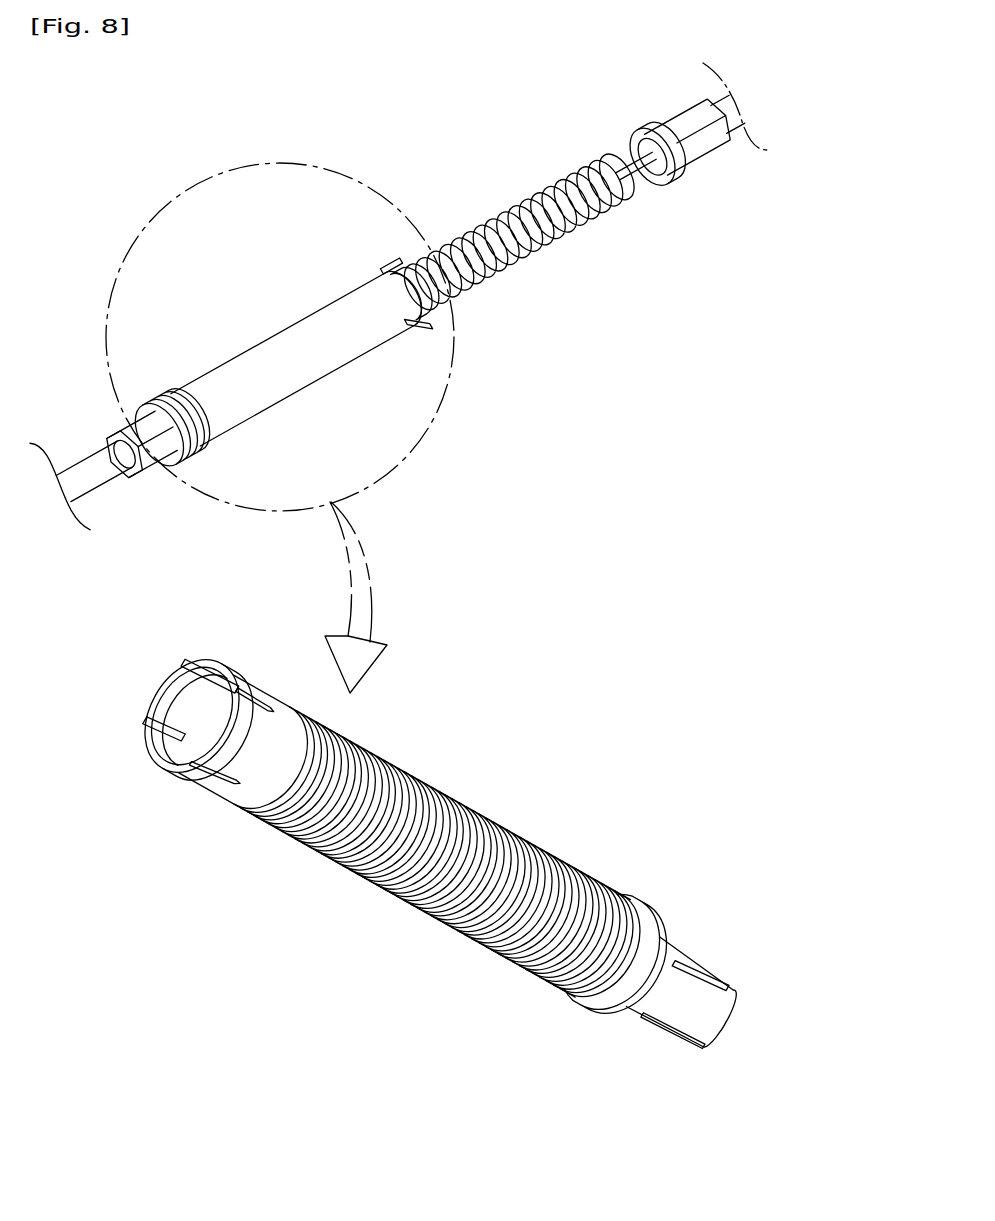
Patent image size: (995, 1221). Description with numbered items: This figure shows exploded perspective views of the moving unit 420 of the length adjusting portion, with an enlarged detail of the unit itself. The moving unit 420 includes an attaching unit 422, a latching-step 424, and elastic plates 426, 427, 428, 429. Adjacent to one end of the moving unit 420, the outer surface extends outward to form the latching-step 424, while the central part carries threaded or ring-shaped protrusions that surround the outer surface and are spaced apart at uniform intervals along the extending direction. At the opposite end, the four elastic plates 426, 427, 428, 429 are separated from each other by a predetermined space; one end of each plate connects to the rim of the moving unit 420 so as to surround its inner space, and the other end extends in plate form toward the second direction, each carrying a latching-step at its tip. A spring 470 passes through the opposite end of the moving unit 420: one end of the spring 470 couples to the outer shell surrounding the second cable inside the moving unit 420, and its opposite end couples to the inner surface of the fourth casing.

The moving unit 420 is at (272, 222).
The attaching unit 422 is at (297, 350).
The latching-step 424 is at (197, 393).
The elastic plate 426 is at (382, 268).
The elastic plate 427 is at (173, 698).
The elastic plate 428 is at (182, 757).
The elastic plate 429 is at (160, 757).
The spring 470 is at (463, 250).